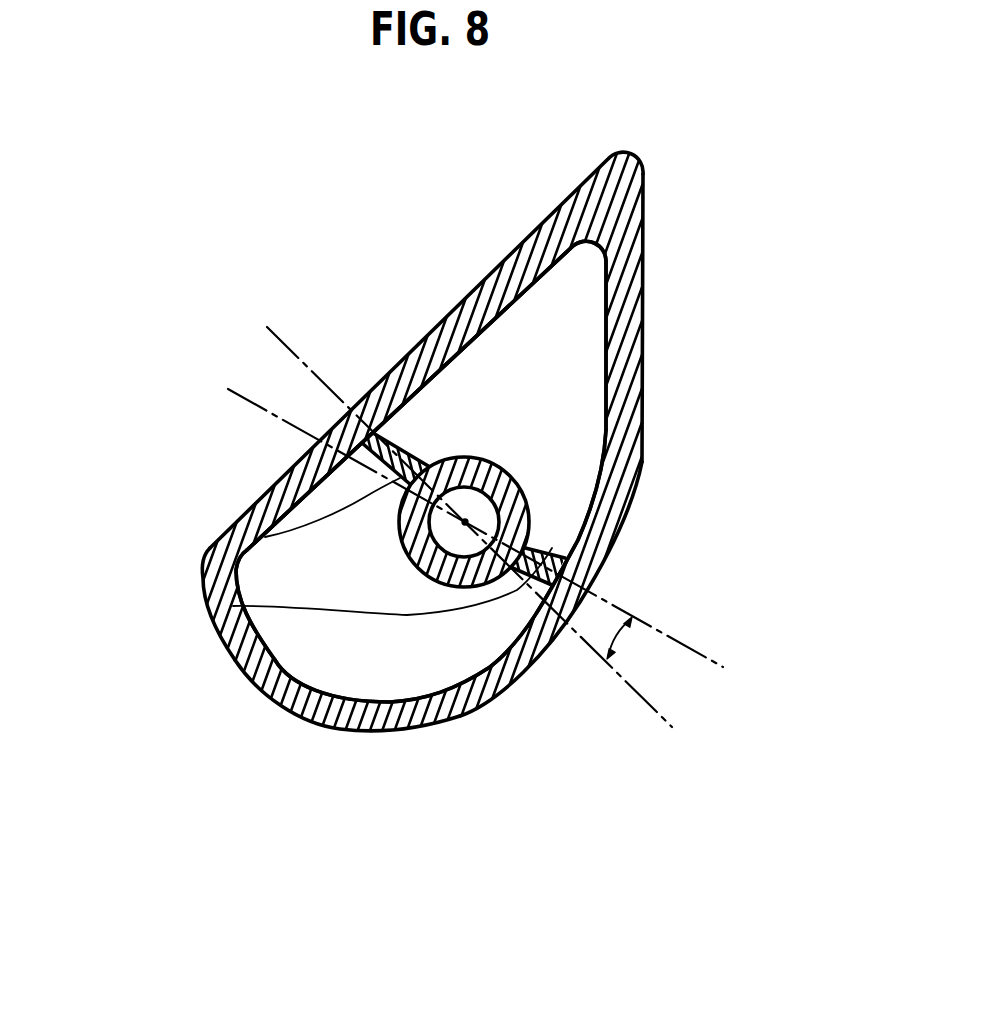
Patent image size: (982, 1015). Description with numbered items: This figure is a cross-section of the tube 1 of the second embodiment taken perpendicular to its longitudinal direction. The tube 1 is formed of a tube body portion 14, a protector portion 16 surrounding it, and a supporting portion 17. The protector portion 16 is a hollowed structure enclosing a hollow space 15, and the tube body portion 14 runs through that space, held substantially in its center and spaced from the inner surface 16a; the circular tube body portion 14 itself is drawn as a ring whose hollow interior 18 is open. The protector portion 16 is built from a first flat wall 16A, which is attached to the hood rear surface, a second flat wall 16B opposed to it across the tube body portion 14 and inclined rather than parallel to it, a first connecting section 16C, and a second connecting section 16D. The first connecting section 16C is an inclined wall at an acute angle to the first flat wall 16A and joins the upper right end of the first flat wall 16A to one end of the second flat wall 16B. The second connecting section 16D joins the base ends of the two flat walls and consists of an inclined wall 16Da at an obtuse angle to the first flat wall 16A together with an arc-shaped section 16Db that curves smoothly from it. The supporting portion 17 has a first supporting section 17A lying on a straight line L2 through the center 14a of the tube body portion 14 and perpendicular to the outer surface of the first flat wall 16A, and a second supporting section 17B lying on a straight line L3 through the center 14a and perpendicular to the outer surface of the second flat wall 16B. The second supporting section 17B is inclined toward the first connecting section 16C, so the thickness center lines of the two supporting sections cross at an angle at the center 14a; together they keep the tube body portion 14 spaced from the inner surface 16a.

The tube 1 is at (692, 426).
The tube body portion 14 is at (476, 473).
The center of the tube body portion 14a is at (410, 559).
The hollow space 15 is at (412, 655).
The protector portion 16 is at (628, 337).
The first flat wall 16A is at (420, 368).
The inner surface 16a is at (500, 314).
The second flat wall 16B is at (575, 560).
The first connecting section 16C is at (630, 275).
The second connecting section 16D is at (300, 704).
The inclined wall 16Da is at (226, 633).
The arc-shaped section 16Db is at (428, 724).
The supporting portion 17 is at (97, 524).
The first supporting section 17A is at (265, 537).
The second supporting section 17B is at (233, 606).
The hole 18 is at (486, 510).
The straight line L2 is at (651, 704).
The straight line L3 is at (697, 650).